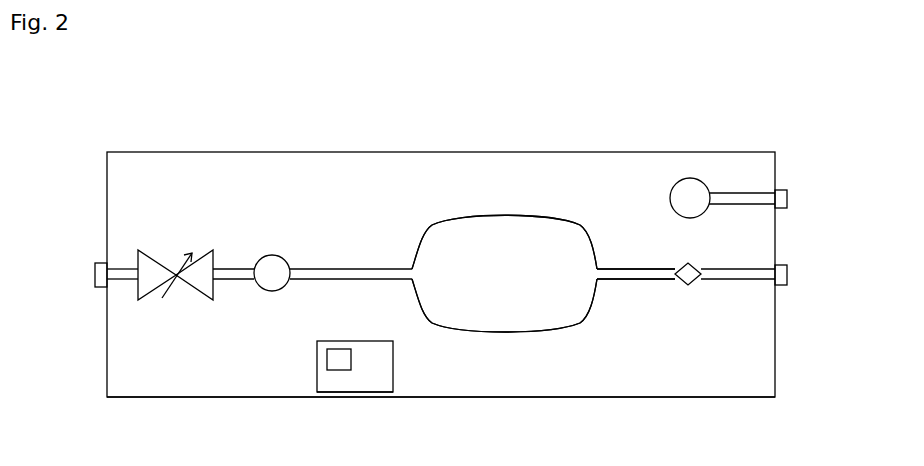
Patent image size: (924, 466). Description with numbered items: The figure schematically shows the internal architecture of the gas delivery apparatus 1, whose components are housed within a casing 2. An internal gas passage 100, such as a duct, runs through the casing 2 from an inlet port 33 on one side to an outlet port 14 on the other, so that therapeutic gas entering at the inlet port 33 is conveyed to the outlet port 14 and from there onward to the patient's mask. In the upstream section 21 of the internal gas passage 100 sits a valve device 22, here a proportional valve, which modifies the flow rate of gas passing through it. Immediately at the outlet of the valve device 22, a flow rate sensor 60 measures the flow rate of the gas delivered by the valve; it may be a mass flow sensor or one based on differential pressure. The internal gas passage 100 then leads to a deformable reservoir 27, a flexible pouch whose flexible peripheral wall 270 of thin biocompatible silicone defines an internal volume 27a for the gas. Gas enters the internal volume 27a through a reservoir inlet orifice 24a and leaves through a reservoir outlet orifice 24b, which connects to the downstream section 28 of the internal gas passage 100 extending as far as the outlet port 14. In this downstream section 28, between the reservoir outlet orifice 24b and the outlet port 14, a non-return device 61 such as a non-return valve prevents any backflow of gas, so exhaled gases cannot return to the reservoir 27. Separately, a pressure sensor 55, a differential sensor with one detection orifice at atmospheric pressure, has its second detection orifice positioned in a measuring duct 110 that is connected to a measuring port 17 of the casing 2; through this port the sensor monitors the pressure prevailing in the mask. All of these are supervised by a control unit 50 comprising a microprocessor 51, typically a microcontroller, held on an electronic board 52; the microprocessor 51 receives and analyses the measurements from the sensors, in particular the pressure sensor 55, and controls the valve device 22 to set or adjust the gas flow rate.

The gas delivery apparatus 1 is at (395, 143).
The casing 2 is at (153, 397).
The outlet port 14 is at (788, 268).
The measuring port 17 is at (788, 192).
The upstream section 21 is at (128, 268).
The valve device 22 is at (200, 248).
The reservoir inlet orifice 24a is at (411, 264).
The reservoir outlet orifice 24b is at (594, 284).
The deformable reservoir 27 is at (536, 333).
The internal volume 27a is at (496, 295).
The flexible peripheral wall 270 is at (456, 333).
The downstream section 28 is at (618, 283).
The inlet port 33 is at (95, 263).
The control unit 50 is at (337, 378).
The microprocessor 51 is at (327, 352).
The electronic board 52 is at (374, 382).
The pressure sensor 55 is at (677, 181).
The flow rate sensor 60 is at (262, 290).
The non-return device 61 is at (693, 285).
The internal gas passage 100 is at (120, 281).
The measuring duct 110 is at (735, 206).